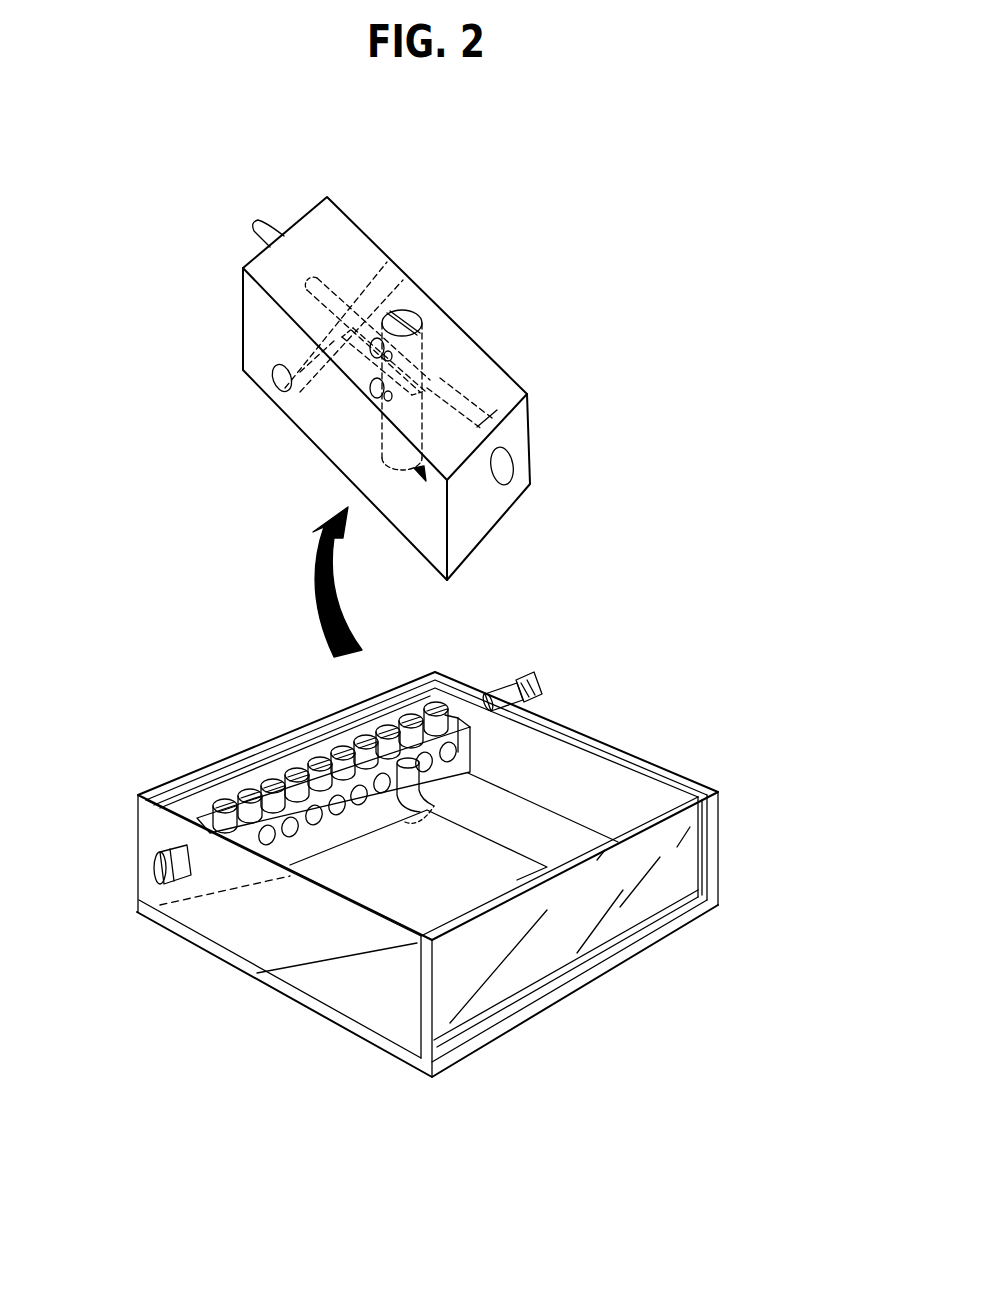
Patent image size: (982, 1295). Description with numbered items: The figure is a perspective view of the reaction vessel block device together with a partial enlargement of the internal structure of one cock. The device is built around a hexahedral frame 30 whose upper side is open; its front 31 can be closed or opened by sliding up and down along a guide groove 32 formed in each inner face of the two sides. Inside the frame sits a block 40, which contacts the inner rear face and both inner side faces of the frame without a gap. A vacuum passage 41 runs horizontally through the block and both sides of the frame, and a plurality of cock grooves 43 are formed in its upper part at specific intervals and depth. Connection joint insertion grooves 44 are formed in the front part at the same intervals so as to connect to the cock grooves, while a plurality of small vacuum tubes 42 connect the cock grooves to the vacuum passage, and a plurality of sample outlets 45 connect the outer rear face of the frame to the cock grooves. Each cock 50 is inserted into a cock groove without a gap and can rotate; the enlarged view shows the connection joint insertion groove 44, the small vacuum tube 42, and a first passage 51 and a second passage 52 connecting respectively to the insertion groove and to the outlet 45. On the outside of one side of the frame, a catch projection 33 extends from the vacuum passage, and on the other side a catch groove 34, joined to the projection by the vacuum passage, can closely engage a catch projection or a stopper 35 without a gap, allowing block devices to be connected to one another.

The hexahedral frame 30 is at (373, 877).
The front 31 is at (577, 882).
The guide groove 32 is at (706, 792).
The catch projection 33 is at (530, 686).
The catch groove 34 is at (175, 793).
The stopper 35 is at (157, 866).
The block 40 is at (518, 445).
The vacuum passage 41 is at (278, 388).
The small vacuum tube 42 is at (342, 393).
The cock groove 43 is at (420, 476).
The connection joint insertion groove 44 is at (490, 425).
The sample outlet 45 is at (318, 275).
The cock 50 is at (413, 315).
The first passage 51 is at (405, 383).
The second passage 52 is at (372, 428).